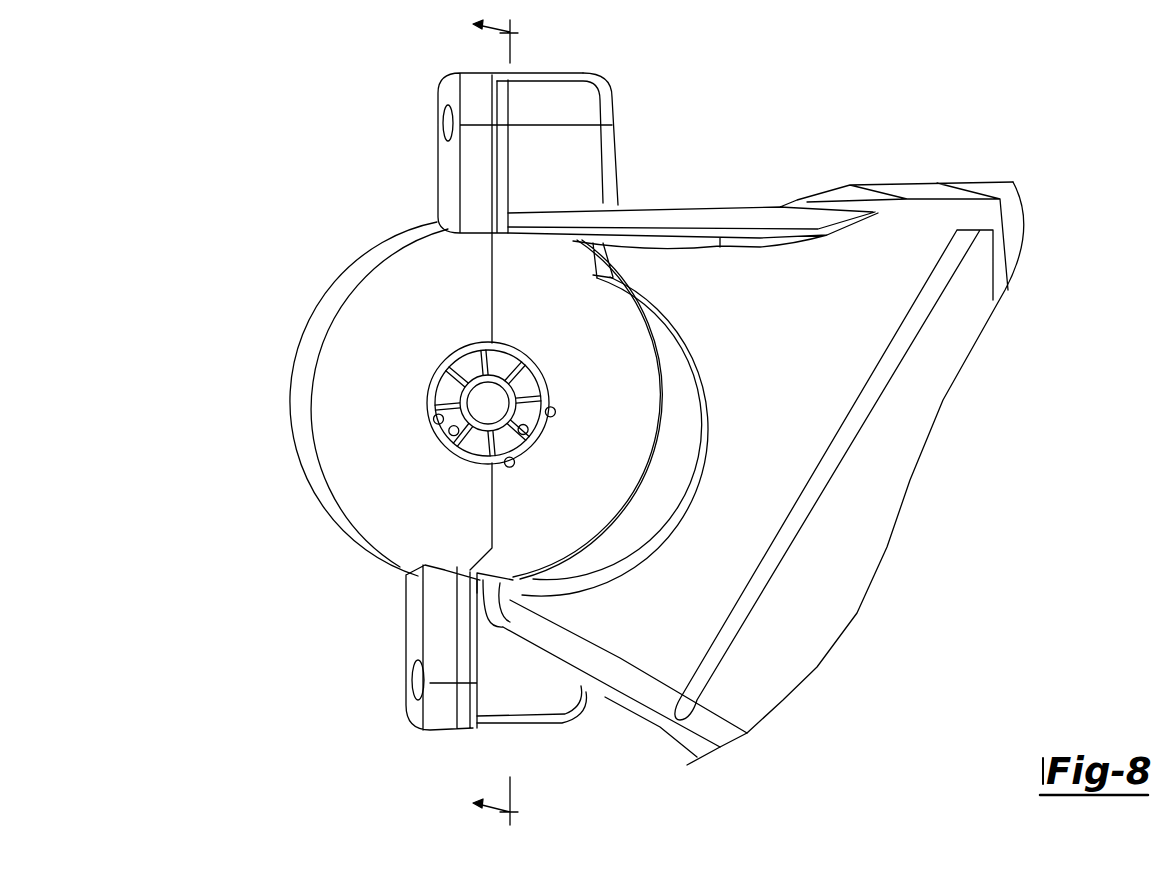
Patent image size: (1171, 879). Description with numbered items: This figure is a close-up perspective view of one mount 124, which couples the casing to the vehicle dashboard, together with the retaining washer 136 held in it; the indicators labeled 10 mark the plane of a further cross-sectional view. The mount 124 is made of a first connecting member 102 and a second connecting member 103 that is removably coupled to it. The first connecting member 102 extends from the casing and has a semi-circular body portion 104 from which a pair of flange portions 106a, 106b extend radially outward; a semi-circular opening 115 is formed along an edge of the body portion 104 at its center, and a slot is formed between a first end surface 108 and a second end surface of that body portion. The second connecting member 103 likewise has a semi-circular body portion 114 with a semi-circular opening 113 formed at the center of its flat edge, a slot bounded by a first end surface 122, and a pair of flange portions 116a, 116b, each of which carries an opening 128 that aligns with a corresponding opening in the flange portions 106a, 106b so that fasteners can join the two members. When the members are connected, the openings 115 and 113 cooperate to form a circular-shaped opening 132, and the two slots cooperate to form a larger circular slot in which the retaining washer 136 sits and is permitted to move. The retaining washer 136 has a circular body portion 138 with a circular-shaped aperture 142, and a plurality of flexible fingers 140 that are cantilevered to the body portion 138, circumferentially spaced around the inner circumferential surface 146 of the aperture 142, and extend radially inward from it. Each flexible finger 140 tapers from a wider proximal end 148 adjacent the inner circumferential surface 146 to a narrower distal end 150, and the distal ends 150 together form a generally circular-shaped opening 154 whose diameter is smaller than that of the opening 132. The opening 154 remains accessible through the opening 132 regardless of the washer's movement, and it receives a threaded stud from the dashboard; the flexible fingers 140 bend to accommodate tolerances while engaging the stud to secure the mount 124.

The section line 10- 10 is at (513, 424).
The first connecting member 102 is at (608, 83).
The second connecting member 103 is at (376, 243).
The body portion 104 is at (595, 308).
The flange portion 106a is at (568, 101).
The flange portion 106b is at (541, 702).
The first end surface 108 is at (603, 488).
The semi-circular opening 113 is at (452, 429).
The body portion 114 is at (304, 382).
The semi-circular opening 115 is at (545, 426).
The flange portion 116a is at (445, 152).
The flange portion 116b is at (422, 725).
The first end surface 122 is at (333, 427).
The mount 124 is at (304, 288).
The opening 128 is at (416, 680).
The circular-shaped opening 132 is at (518, 455).
The retaining washer 136 is at (528, 361).
The body portion 138 is at (482, 465).
The flexible fingers 140 is at (522, 404).
The circular-shaped aperture 142 is at (460, 443).
The inner circumferential surface 146 is at (516, 436).
The proximal end 148 is at (460, 380).
The distal end 150 is at (448, 402).
The circular-shaped opening 154 is at (487, 415).